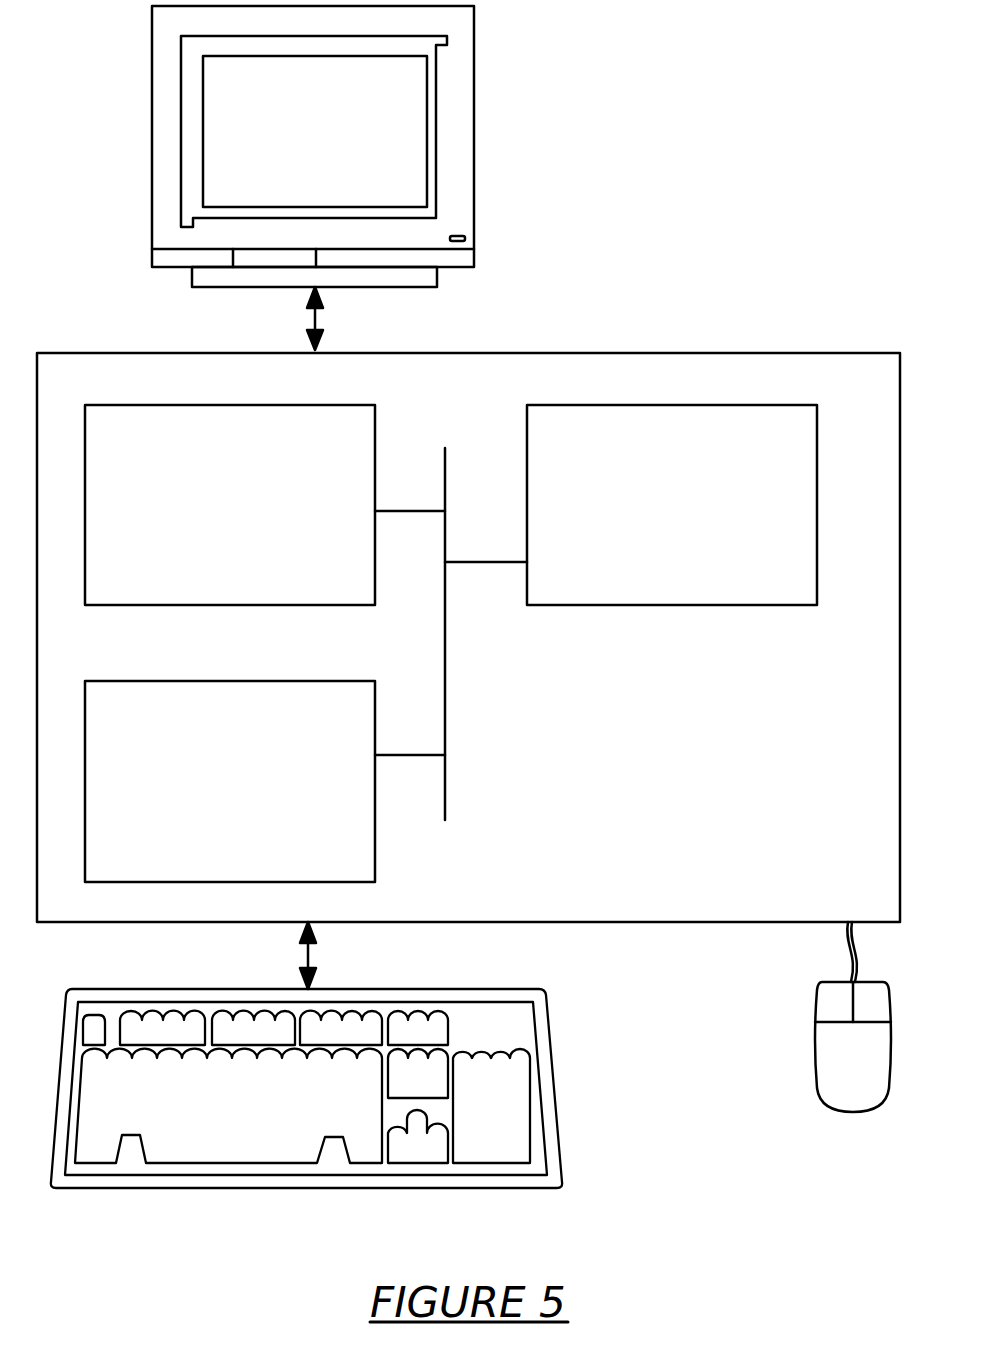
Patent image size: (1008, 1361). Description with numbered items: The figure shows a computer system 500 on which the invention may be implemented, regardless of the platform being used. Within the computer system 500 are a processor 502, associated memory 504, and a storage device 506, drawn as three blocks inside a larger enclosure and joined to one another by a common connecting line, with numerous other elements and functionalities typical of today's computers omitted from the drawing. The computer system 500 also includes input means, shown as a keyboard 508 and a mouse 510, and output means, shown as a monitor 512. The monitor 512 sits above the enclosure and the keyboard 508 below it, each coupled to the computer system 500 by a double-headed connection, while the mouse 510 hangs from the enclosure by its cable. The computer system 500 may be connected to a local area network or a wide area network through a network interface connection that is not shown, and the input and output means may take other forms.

The computer system 500 is at (734, 212).
The processor 502 is at (646, 519).
The memory 504 is at (204, 519).
The storage device 506 is at (207, 794).
The keyboard 508 is at (216, 1122).
The mouse 510 is at (826, 1073).
The monitor 512 is at (286, 149).